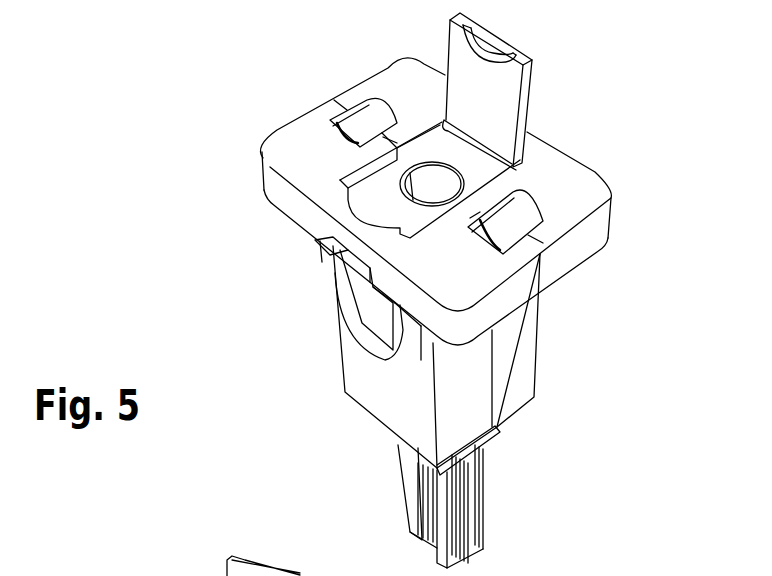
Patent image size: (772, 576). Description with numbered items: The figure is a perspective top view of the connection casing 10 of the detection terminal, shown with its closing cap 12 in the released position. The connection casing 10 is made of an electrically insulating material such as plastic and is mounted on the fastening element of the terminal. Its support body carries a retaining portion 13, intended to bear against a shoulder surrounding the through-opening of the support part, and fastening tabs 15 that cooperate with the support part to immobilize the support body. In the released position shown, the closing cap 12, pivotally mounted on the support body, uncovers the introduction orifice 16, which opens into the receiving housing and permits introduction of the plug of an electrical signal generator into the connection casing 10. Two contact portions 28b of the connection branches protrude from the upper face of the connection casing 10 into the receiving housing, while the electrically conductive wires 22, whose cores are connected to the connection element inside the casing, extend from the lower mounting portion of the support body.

The connection casing 10 is at (357, 422).
The closing cap 12 is at (505, 100).
The retaining portion 13 is at (598, 192).
The fastening tabs 15 is at (335, 272).
The introduction orifice 16 is at (447, 171).
The electrically conductive wire 22 is at (437, 518).
The contact portion 28b is at (377, 113).